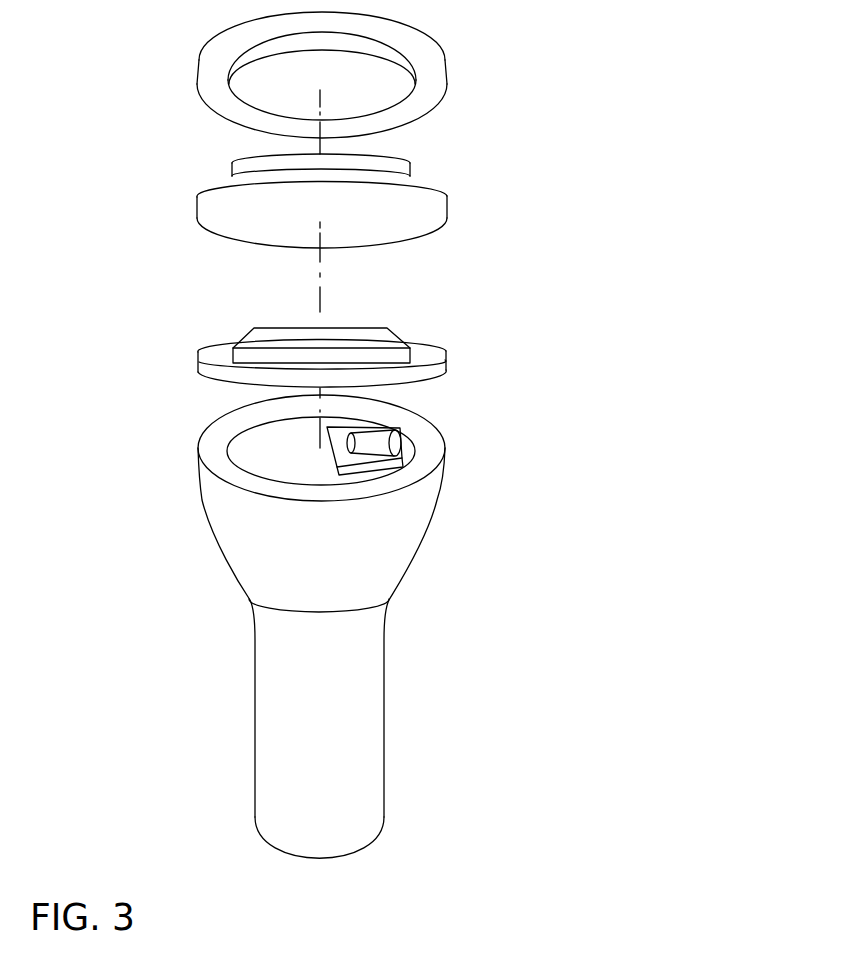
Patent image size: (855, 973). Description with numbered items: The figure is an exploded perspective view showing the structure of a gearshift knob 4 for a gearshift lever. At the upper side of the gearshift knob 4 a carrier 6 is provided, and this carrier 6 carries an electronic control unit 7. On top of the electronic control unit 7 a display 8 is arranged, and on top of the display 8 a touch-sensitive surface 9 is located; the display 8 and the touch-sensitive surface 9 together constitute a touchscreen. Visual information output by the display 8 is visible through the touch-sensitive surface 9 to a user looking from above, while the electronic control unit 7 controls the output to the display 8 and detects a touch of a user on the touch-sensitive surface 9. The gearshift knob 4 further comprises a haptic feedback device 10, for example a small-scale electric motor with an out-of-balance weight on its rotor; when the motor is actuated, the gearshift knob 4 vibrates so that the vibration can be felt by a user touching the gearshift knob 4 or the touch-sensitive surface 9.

The gearshift knob 4 is at (126, 431).
The carrier 6 is at (209, 349).
The electronic control unit 7 is at (423, 355).
The display 8 is at (420, 172).
The touch-sensitive surface 9 is at (412, 83).
The haptic feedback device 10 is at (413, 440).